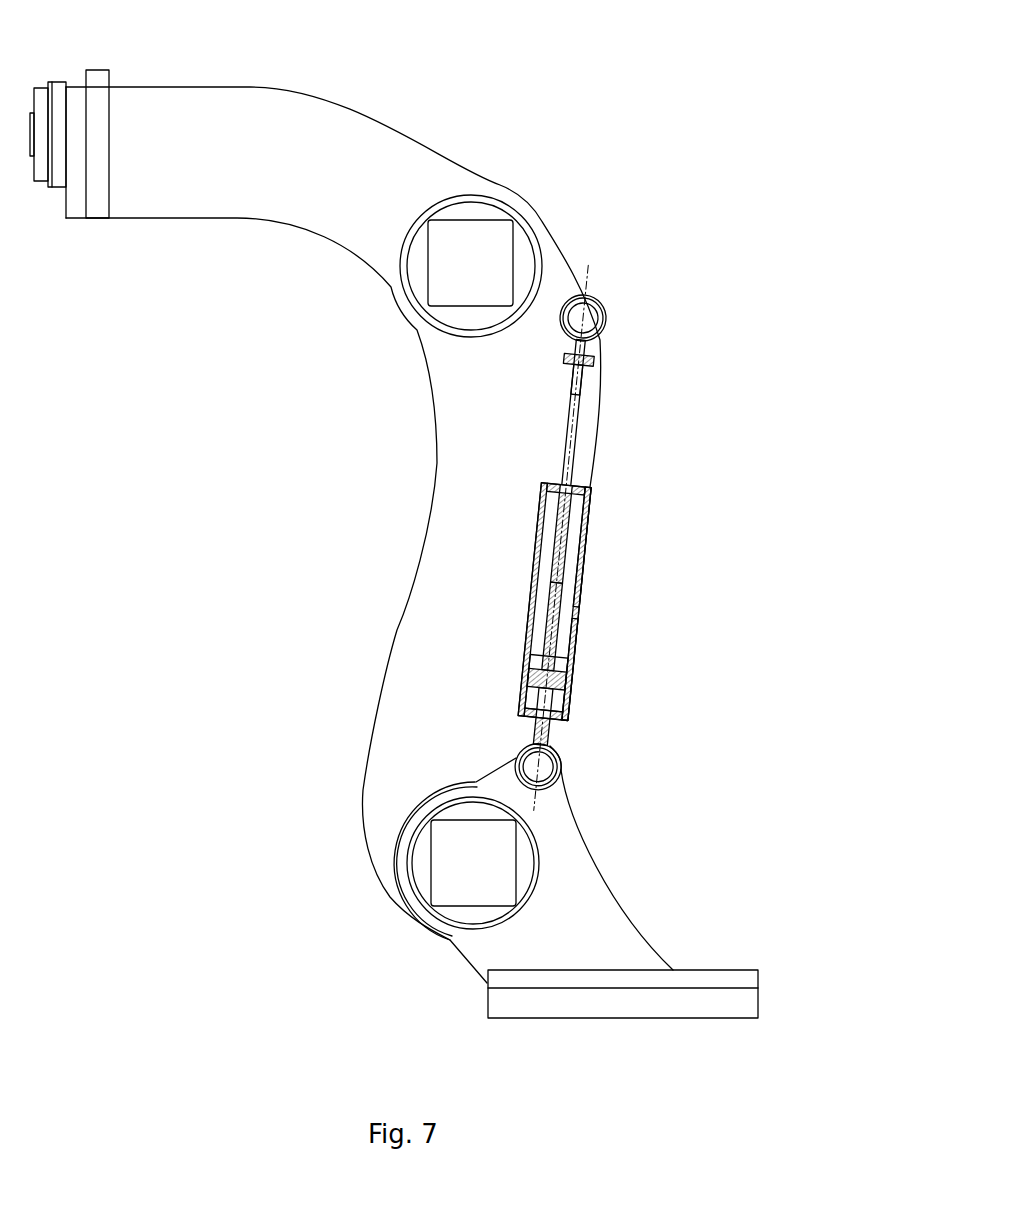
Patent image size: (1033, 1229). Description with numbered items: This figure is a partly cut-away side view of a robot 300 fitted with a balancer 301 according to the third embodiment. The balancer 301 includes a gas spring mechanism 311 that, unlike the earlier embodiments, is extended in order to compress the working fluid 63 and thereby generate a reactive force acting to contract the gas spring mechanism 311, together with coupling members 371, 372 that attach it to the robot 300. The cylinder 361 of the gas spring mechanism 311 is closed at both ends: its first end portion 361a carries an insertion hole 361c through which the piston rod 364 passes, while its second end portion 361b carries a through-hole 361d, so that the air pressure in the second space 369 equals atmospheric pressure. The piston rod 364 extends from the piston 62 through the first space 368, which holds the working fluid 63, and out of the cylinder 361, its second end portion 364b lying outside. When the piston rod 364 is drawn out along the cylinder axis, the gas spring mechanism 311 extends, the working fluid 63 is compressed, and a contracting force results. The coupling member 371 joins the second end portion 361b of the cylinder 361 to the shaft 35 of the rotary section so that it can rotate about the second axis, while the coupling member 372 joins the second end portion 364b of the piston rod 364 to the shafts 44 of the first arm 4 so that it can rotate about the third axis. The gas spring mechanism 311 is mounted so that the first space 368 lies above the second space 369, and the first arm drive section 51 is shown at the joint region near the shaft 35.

The robot 300 is at (612, 125).
The first arm 4 is at (437, 358).
The shafts 44 is at (598, 300).
The coupling member 372 is at (585, 350).
The second end portion of the piston rod 364b is at (587, 383).
The piston rod 364 is at (576, 421).
The insertion hole 361c is at (568, 462).
The first end portion of the cylinder 361a is at (593, 487).
The working fluid 63 is at (570, 527).
The cylinder 361 is at (586, 566).
The first space 368 is at (567, 612).
The balancer 301 is at (645, 638).
The piston 62 is at (521, 672).
The gas spring mechanism 311 is at (590, 655).
The second space 369 is at (550, 701).
The through-hole 361d is at (519, 717).
The second end portion of the cylinder 361b is at (568, 727).
The coupling member 371 is at (557, 757).
The shaft 35 is at (565, 782).
The first arm drive section 51 is at (447, 876).